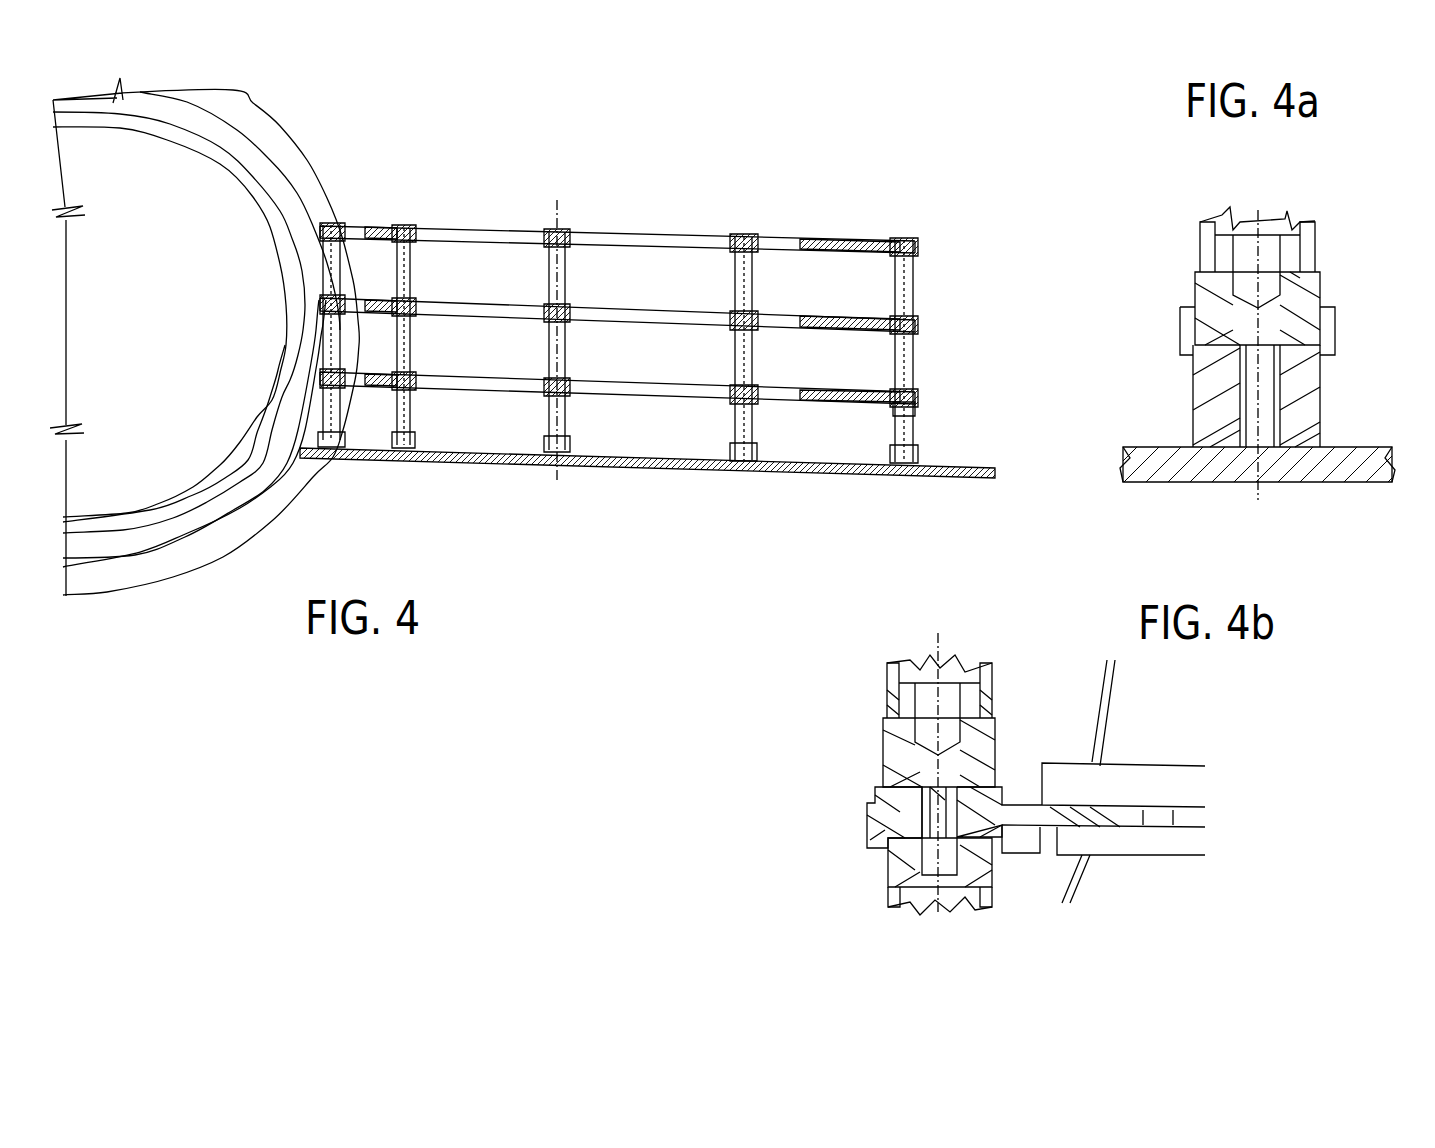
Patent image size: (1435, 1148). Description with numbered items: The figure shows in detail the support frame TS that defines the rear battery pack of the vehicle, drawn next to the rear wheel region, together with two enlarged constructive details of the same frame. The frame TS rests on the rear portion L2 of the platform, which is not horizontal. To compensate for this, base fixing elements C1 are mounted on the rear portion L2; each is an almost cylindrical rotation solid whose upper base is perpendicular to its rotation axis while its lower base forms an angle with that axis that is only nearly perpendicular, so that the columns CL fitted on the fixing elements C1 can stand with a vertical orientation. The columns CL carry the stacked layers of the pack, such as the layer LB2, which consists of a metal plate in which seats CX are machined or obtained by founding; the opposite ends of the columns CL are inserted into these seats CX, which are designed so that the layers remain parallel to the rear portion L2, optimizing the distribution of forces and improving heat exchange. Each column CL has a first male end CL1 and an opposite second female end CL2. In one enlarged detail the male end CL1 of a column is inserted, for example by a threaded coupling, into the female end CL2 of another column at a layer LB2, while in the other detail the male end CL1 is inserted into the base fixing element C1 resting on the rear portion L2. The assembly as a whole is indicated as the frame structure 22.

In FIG. 4, the support frame TS is at (818, 190).
In FIG. 4, the scaffold assembly 22 is at (618, 364).
In FIG. 4, the column CL is at (735, 357).
In FIG. 4, the base fixing element C1 is at (435, 457).
In FIG. 4A, the base fixing element C1 is at (1337, 374).
In FIG. 4, the seat CX is at (540, 246).
In FIG. 4B, the seat CX is at (868, 822).
In FIG. 4, the rear portion of the platform L2 is at (790, 480).
In FIG. 4A, the rear portion of the platform L2 is at (1363, 478).
In FIG. 4A, the first male end CL1 is at (1320, 268).
In FIG. 4B, the first male end CL1 is at (890, 745).
In FIG. 4B, the second female end CL2 is at (887, 882).
In FIG. 4B, the layer LB2 is at (1150, 847).